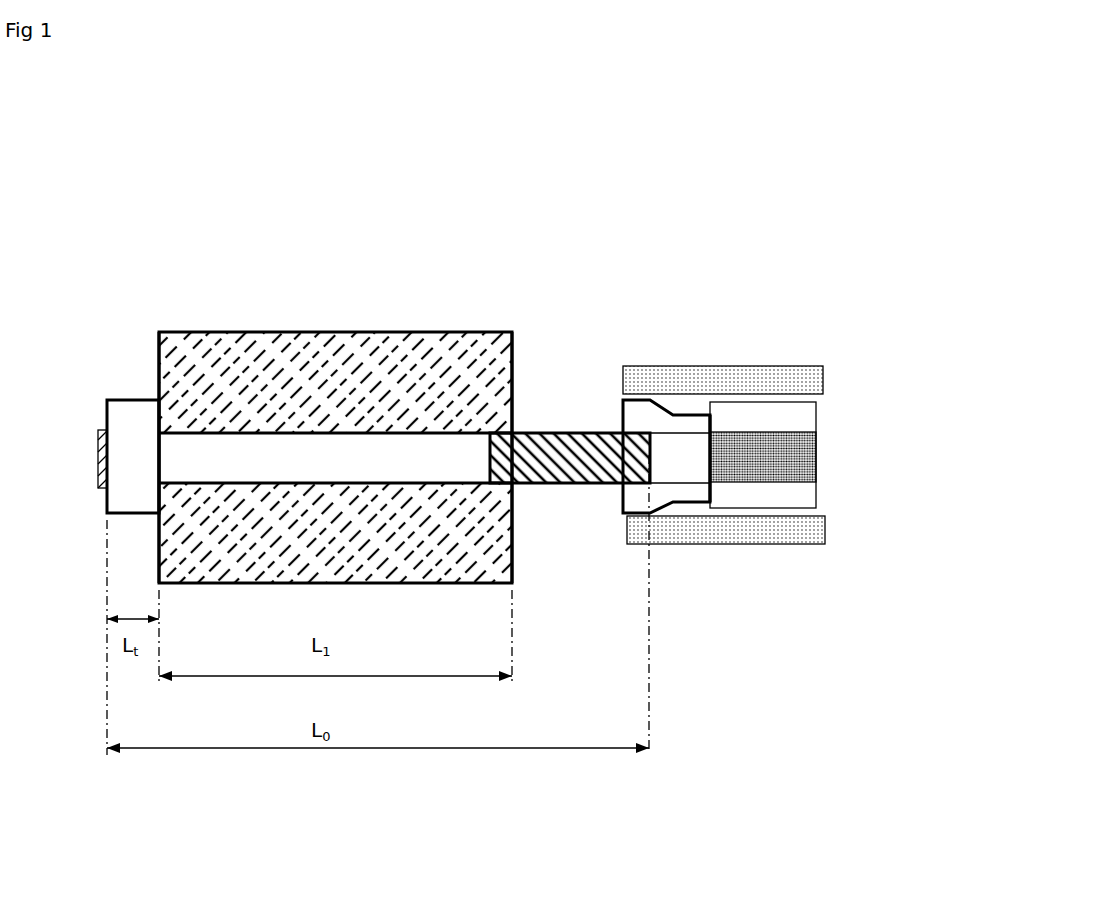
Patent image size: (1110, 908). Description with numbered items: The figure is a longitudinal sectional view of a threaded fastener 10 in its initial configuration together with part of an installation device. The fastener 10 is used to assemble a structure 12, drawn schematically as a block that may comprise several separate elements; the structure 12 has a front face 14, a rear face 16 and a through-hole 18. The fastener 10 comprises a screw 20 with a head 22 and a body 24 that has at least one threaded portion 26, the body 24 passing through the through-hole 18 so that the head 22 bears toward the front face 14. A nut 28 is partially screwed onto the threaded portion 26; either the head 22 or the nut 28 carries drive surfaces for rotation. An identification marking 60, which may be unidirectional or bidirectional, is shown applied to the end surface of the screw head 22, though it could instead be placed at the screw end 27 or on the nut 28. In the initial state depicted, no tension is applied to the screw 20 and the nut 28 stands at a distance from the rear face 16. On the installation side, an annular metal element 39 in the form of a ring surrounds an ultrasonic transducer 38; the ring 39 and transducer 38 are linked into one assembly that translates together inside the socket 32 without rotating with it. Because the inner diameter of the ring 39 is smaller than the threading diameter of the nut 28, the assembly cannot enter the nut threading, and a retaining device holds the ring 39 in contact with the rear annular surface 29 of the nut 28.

The threaded fastener 10 is at (603, 322).
The structure 12 is at (265, 332).
The front face 14 is at (159, 367).
The rear face 16 is at (512, 389).
The through-hole 18 is at (382, 470).
The screw 20 is at (92, 546).
The head 22 is at (106, 410).
The body 24 is at (315, 442).
The threaded portion 26 is at (571, 488).
The screw end 27 is at (652, 461).
The nut 28 is at (652, 402).
The rear annular surface 29 is at (712, 490).
The socket 32 is at (722, 366).
The ultrasonic transducer 38 is at (816, 455).
The annular metal element 39 is at (816, 492).
The identification marking 60 is at (96, 458).